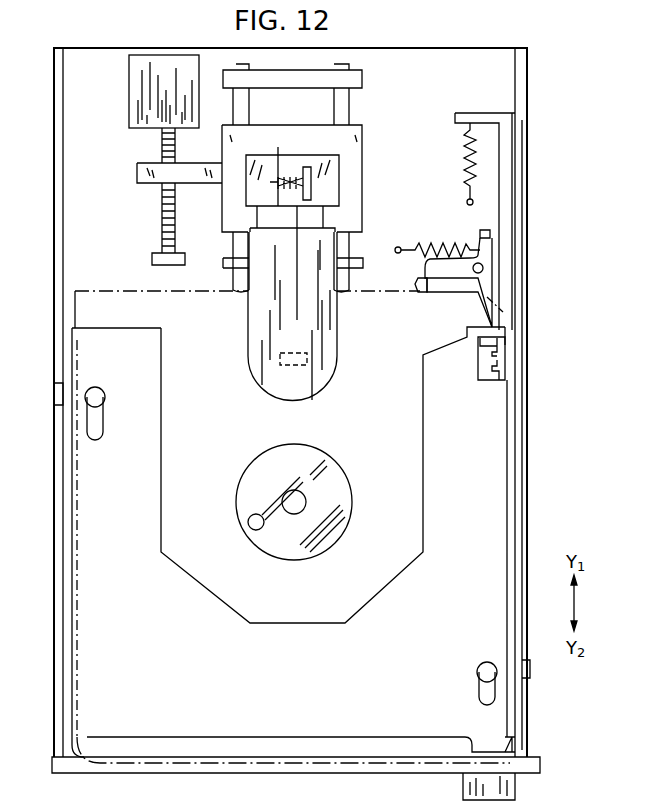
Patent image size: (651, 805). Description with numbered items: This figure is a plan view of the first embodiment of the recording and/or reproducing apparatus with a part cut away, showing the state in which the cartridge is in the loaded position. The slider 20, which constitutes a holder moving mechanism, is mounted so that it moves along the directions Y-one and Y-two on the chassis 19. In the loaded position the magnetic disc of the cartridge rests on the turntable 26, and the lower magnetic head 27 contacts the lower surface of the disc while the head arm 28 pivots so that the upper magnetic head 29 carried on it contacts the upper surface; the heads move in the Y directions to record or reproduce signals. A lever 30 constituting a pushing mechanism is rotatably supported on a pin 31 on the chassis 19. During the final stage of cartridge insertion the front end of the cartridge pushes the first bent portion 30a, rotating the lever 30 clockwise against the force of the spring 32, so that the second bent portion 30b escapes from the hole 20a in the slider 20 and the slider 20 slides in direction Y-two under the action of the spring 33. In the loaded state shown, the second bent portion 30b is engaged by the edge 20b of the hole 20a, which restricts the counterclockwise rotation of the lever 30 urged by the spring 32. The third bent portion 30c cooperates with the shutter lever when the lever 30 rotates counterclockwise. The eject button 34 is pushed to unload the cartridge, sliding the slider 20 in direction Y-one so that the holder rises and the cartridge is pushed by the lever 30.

The chassis 19 is at (447, 54).
The slider 20 is at (497, 513).
The hole 20a is at (505, 375).
The edge 20b is at (500, 348).
The turntable 26 is at (336, 464).
The lower magnetic head 27 is at (214, 391).
The head arm 28 is at (253, 313).
The upper magnetic head 29 is at (268, 356).
The lever 30 is at (487, 282).
The first bent portion 30a is at (414, 288).
The second bent portion 30b is at (482, 345).
The third bent portion 30c is at (483, 237).
The pin 31 is at (500, 265).
The spring 32 is at (437, 236).
The spring 33 is at (463, 151).
The eject button 34 is at (510, 786).